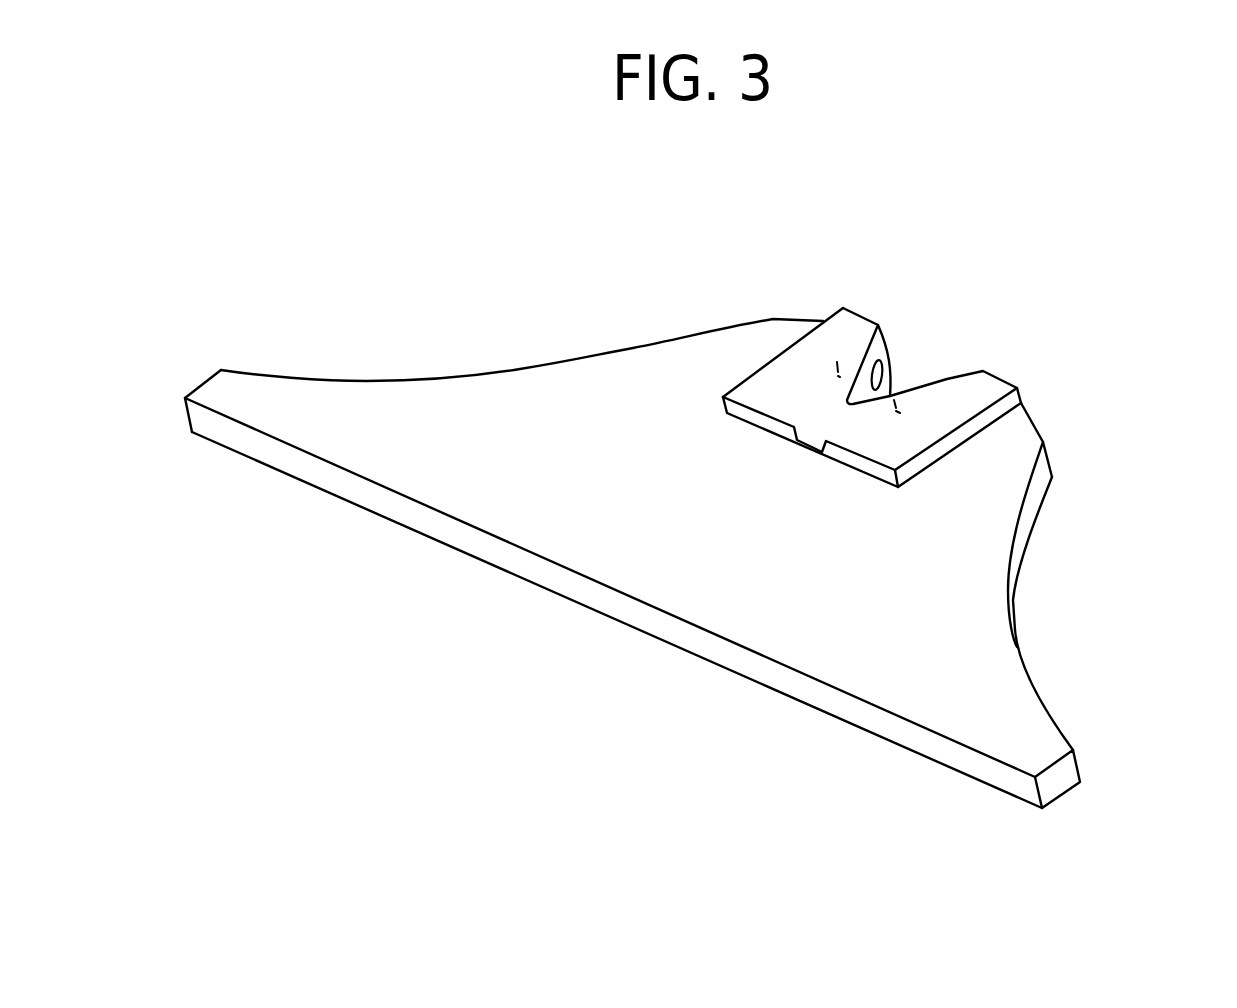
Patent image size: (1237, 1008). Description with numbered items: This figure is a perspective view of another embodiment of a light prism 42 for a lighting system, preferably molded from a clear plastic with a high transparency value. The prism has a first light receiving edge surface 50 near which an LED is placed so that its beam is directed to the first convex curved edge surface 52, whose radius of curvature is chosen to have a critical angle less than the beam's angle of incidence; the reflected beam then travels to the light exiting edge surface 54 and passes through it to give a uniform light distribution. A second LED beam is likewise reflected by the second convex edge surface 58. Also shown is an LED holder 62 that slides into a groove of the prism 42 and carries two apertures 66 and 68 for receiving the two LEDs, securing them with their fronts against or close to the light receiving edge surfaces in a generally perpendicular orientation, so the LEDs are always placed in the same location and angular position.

The light prism 42 is at (544, 705).
The first light receiving edge surface 50 is at (816, 693).
The first convex curved edge surface 52 is at (557, 366).
The light exiting edge surface 54 is at (388, 507).
The second convex edge surface 58 is at (1010, 553).
The LED holder 62 is at (938, 417).
The aperture 66 is at (885, 350).
The aperture 68 is at (950, 377).